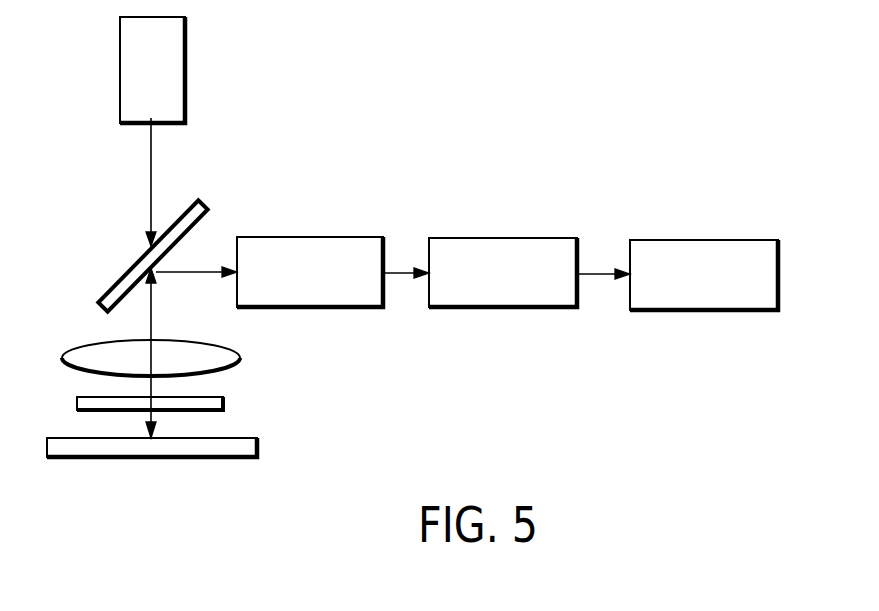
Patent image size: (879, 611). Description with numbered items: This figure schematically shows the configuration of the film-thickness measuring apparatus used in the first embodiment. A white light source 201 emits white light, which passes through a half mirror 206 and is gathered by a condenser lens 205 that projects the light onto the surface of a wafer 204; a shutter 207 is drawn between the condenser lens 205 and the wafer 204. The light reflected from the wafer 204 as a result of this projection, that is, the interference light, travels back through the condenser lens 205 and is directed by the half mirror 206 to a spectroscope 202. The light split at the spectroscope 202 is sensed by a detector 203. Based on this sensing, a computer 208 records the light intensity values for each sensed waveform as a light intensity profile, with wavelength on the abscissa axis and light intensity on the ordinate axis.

The white light source 201 is at (186, 63).
The spectroscope 202 is at (300, 237).
The detector 203 is at (500, 238).
The wafer 204 is at (258, 446).
The condenser lens 205 is at (240, 355).
The half mirror 206 is at (127, 277).
The shutter 207 is at (225, 401).
The computer 208 is at (697, 240).